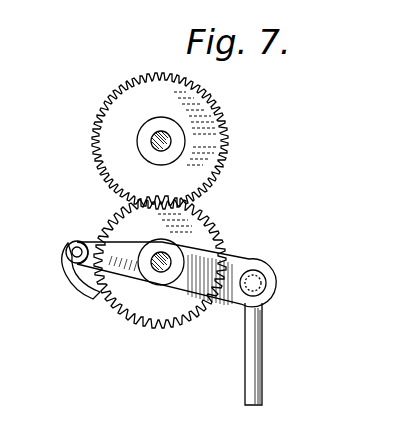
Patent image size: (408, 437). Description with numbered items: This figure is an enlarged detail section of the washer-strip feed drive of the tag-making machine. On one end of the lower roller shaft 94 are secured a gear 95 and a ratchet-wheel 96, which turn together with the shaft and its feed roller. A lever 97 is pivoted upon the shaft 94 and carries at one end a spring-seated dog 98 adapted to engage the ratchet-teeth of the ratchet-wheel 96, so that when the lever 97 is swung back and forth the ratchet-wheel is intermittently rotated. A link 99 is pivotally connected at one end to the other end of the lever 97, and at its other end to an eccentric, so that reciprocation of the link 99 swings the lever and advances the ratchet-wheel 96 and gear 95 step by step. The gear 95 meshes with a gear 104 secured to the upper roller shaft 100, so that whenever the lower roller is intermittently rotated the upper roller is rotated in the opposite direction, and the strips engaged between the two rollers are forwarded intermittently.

The shaft 94 is at (217, 250).
The gear 95 is at (150, 223).
The ratchet-wheel 96 is at (201, 209).
The lever 97 is at (236, 292).
The spring-seated dog 98 is at (88, 268).
The link 99 is at (262, 388).
The shaft 100 is at (169, 141).
The gear 104 is at (213, 132).